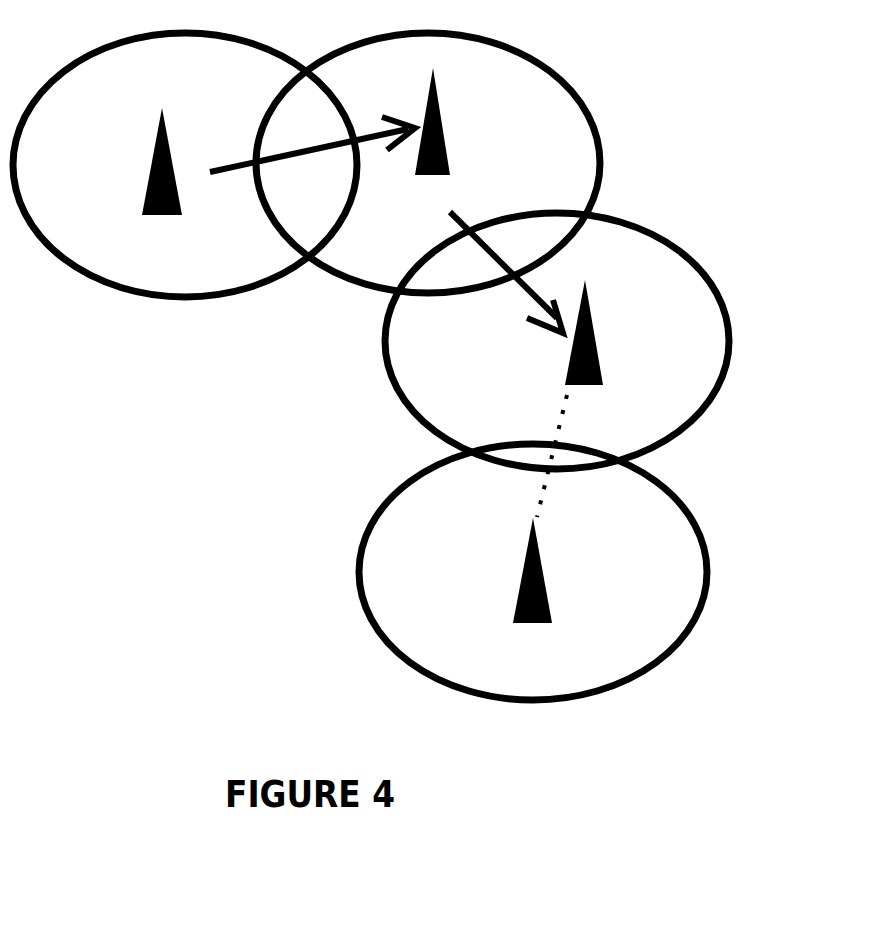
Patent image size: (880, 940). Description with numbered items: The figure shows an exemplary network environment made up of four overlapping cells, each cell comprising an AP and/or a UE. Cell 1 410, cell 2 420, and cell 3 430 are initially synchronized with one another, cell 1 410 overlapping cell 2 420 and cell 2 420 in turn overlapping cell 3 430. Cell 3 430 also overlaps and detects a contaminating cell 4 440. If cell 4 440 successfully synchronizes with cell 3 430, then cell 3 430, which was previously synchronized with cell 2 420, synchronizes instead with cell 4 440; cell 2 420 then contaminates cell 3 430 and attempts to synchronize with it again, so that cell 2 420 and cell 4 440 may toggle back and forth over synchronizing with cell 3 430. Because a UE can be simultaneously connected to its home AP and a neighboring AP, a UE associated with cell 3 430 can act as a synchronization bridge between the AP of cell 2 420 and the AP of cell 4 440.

The cell 1 410 is at (185, 180).
The cell 2 420 is at (428, 152).
The cell 3 430 is at (557, 339).
The cell 4 440 is at (551, 572).
The cell 1 is at (172, 197).
The cell 2 is at (443, 121).
The cell 3 is at (608, 332).
The cell 4 is at (555, 570).